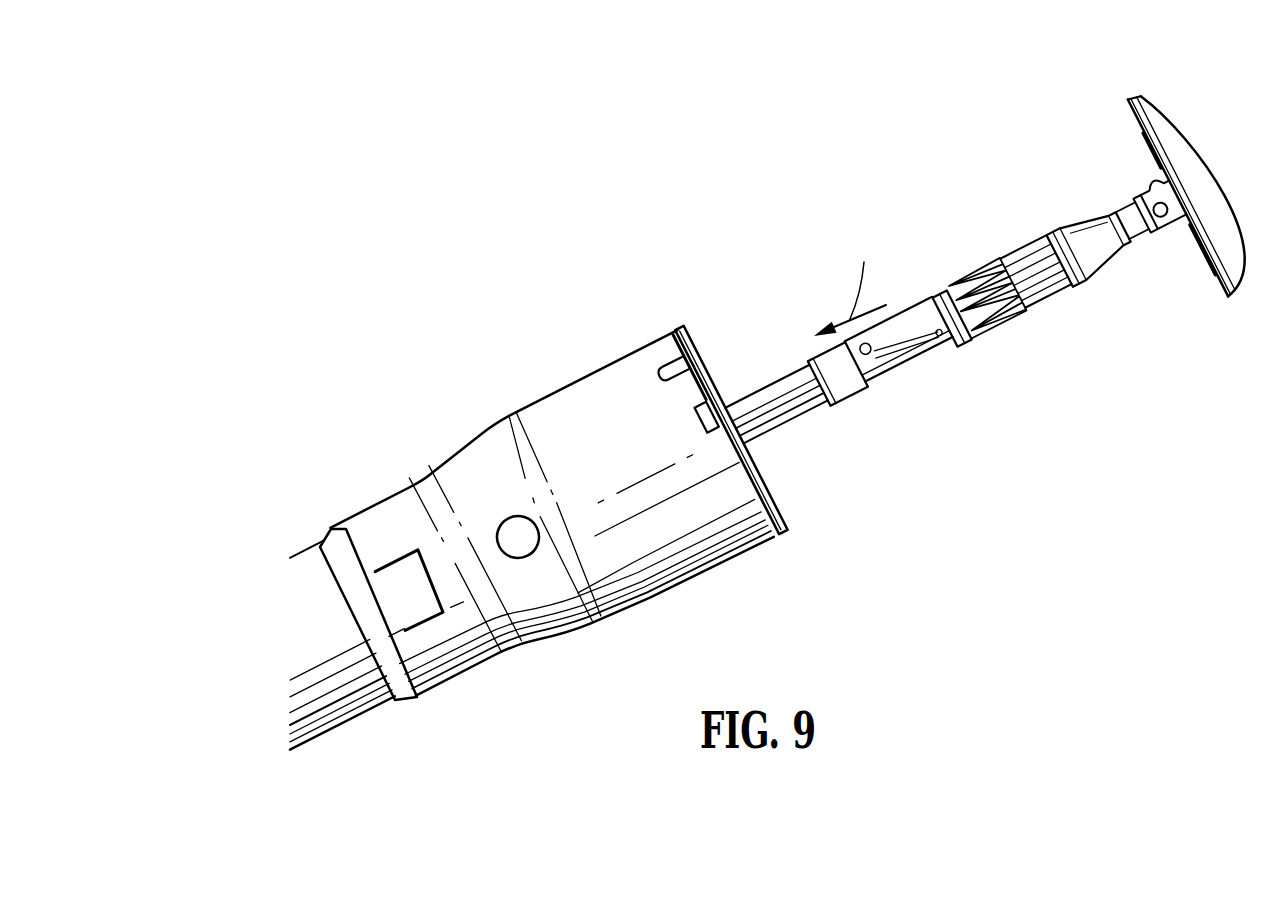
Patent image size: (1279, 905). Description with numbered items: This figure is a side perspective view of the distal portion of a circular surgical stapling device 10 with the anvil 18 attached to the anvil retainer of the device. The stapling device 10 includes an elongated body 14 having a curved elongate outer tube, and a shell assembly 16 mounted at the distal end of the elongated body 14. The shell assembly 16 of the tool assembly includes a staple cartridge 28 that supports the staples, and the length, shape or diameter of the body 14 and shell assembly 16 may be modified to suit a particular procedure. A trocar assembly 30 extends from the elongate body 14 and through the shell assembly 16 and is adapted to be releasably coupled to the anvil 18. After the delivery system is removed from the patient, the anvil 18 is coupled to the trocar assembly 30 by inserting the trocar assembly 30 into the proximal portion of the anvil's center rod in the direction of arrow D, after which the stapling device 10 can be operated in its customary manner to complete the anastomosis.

The surgical stapling device 10 is at (478, 291).
The elongated body 14 is at (336, 733).
The shell assembly 16 is at (686, 588).
The anvil 18 is at (1157, 102).
The staple cartridge 28 is at (695, 333).
The trocar assembly 30 is at (792, 404).